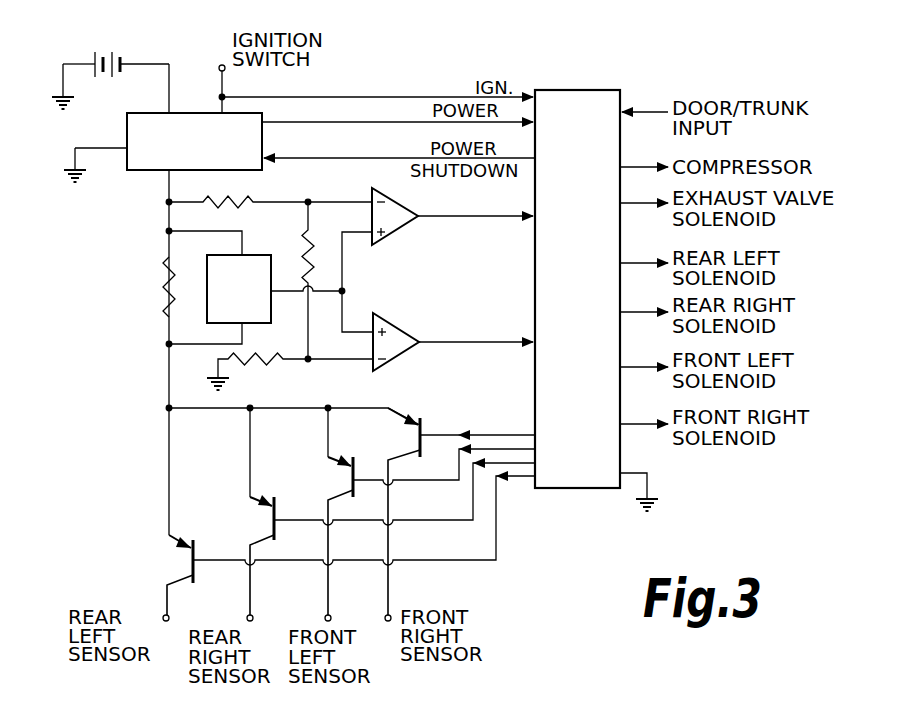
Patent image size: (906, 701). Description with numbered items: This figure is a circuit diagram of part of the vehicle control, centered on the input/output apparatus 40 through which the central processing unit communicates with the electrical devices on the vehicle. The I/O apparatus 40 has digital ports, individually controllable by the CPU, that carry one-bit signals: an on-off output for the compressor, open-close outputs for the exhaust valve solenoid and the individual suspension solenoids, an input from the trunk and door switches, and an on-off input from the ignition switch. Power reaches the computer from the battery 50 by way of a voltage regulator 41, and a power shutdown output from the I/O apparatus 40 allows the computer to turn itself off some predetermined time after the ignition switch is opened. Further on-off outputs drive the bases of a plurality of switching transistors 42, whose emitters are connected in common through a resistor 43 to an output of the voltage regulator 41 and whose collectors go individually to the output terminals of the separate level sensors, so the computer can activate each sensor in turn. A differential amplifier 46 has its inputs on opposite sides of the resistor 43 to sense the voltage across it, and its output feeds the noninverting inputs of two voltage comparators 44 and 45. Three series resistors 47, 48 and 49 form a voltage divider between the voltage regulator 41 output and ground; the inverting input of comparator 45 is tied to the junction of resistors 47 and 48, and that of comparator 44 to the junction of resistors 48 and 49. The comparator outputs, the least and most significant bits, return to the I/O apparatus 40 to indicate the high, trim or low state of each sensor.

The input/output apparatus 40 is at (546, 489).
The voltage regulator 41 is at (152, 171).
The switching transistors 42 is at (178, 545).
The resistor 43 is at (161, 282).
The voltage comparator 44 is at (401, 325).
The voltage comparator 45 is at (397, 233).
The differential amplifier 46 is at (272, 300).
The resistor 47 is at (232, 201).
The resistor 48 is at (306, 256).
The resistor 49 is at (258, 361).
The battery 50 is at (123, 62).